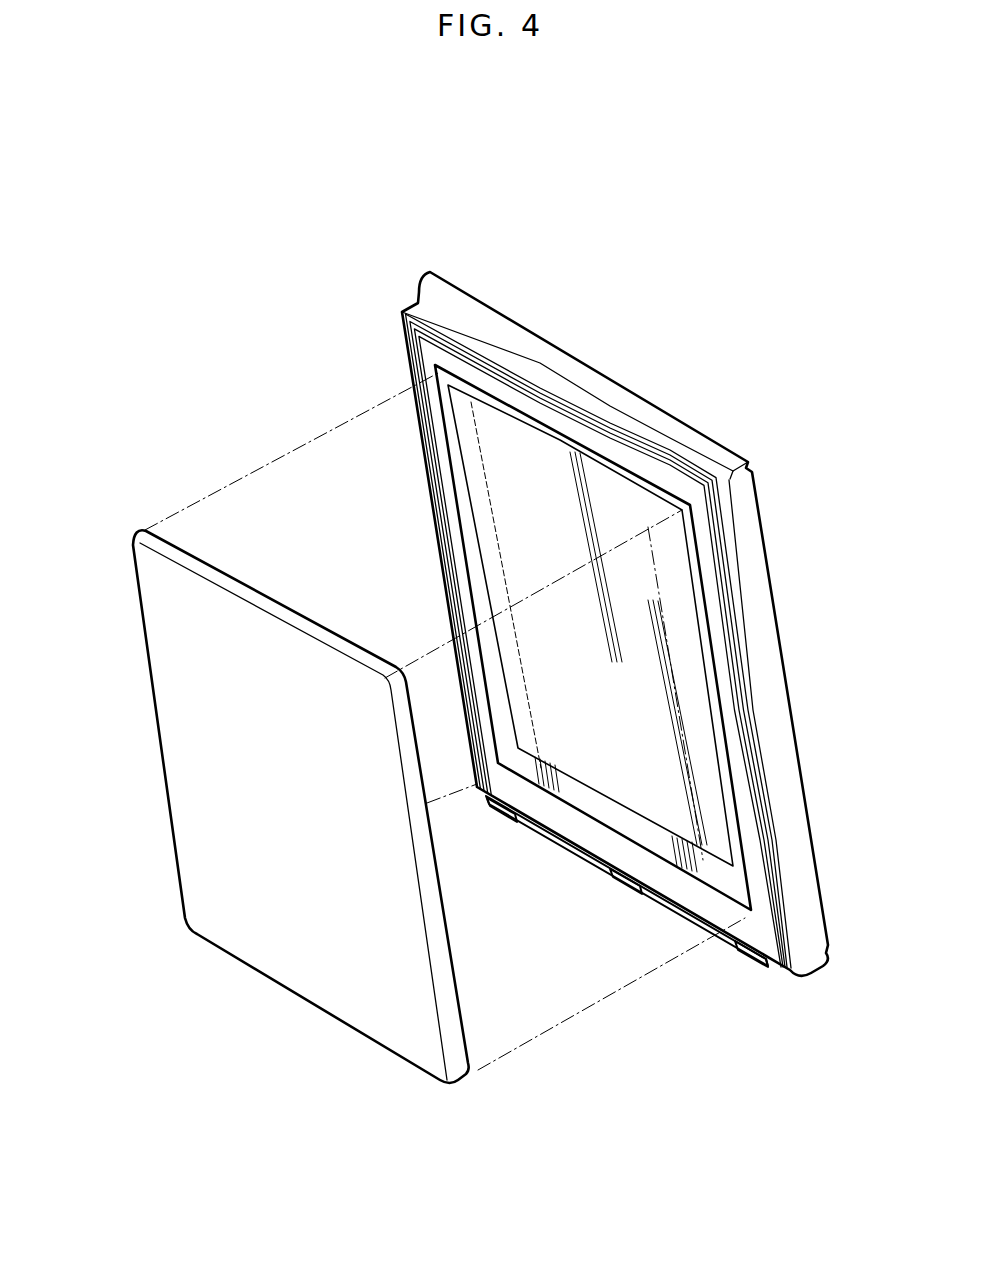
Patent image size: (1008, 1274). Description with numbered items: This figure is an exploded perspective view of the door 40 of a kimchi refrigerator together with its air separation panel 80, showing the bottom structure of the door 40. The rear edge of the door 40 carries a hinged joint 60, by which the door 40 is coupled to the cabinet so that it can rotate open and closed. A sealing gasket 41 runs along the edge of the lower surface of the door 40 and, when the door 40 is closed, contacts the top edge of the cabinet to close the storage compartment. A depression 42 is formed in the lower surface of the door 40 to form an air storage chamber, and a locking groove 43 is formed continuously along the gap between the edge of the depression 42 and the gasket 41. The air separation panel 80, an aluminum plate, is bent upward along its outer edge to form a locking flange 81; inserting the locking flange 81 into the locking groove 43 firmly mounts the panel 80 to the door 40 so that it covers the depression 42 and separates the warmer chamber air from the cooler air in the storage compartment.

The door 40 is at (803, 570).
The sealing gasket 41 is at (583, 408).
The depression 42 is at (694, 720).
The locking groove 43 is at (740, 806).
The hinged joint 60 is at (645, 895).
The air separation panel 80 is at (154, 882).
The locking flange 81 is at (452, 997).